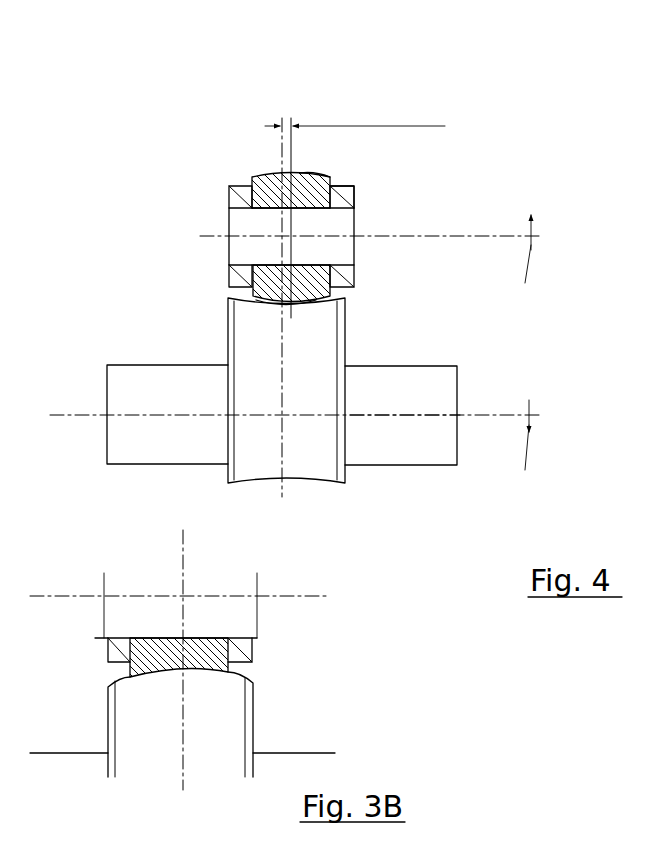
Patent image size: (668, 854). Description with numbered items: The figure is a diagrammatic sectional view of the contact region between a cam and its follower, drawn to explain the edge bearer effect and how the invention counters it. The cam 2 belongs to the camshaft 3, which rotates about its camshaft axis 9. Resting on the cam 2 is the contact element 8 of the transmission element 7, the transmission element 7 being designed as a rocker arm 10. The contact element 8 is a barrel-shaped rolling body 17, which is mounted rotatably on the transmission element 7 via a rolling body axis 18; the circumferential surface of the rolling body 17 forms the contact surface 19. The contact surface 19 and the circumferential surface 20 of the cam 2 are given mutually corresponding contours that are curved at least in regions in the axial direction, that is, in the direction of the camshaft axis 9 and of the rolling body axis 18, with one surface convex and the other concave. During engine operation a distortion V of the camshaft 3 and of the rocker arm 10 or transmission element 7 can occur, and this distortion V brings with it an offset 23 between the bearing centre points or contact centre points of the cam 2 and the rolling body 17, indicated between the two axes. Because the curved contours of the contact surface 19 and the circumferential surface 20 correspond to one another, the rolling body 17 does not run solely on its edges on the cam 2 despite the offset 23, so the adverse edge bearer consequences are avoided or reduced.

In FIG. 4, the cam 2 is at (327, 342).
In FIG. 3B, the cam 2 is at (228, 725).
In FIG. 4, the camshaft 3 is at (388, 395).
In FIG. 4, the transmission element 7 is at (359, 181).
In FIG. 4, the contact element 8 is at (333, 166).
In FIG. 4, the camshaft axis 9 is at (412, 417).
In FIG. 4, the rocker arm 10 is at (230, 188).
In FIG. 4, the rolling body 17 is at (262, 184).
In FIG. 3B, the rolling body 17 is at (252, 658).
In FIG. 4, the rolling body axis 18 is at (540, 232).
In FIG. 4, the contact surface 19 is at (268, 292).
In FIG. 4, the circumferential surface of the cam 20 is at (266, 330).
In FIG. 4, the offset 23 is at (291, 125).
In FIG. 4, the distortion V is at (531, 244).